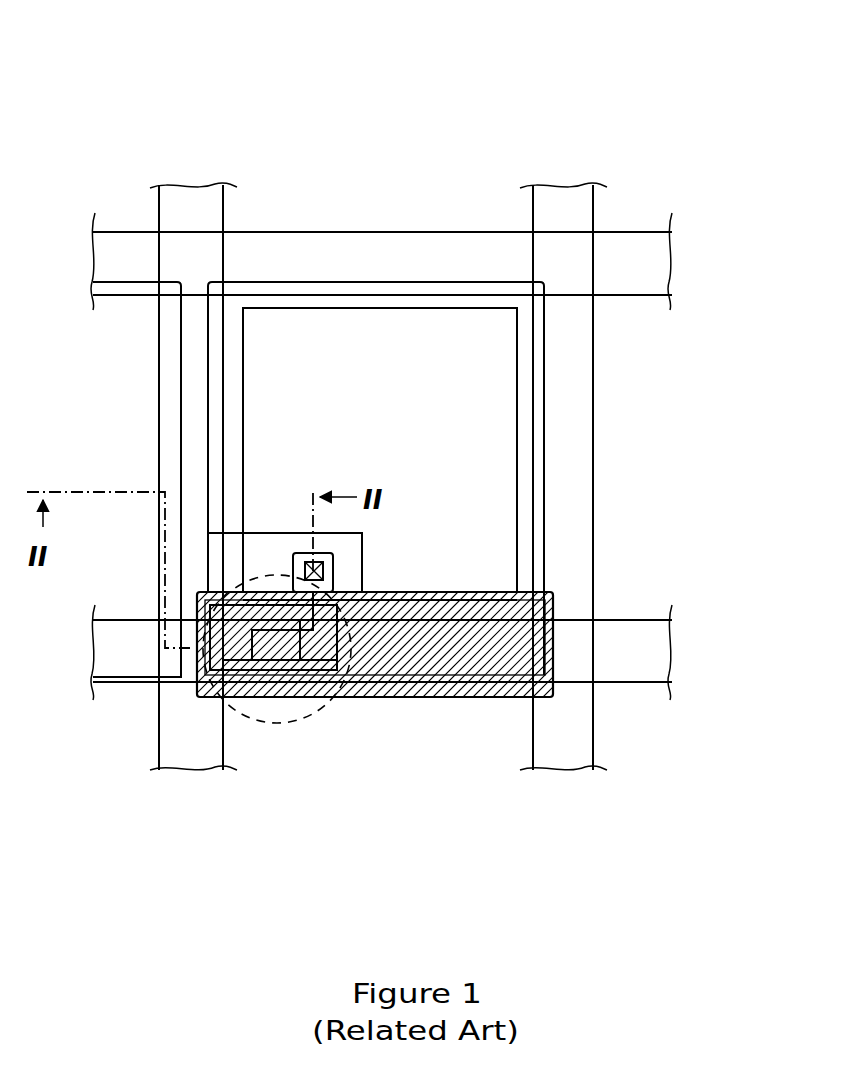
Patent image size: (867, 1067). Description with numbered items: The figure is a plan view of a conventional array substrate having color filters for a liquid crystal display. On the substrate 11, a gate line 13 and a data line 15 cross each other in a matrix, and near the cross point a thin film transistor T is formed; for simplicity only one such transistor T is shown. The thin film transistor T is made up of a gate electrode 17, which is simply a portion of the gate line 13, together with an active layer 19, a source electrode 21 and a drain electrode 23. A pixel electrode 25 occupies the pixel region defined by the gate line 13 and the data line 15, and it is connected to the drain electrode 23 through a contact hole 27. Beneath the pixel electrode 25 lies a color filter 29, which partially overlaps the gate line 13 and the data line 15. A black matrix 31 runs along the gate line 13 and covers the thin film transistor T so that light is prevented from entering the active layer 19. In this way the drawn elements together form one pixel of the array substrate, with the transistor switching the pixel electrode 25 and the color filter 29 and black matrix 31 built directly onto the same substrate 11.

The substrate 11 is at (560, 105).
The gate line 13 is at (630, 616).
The data line 15 is at (156, 446).
The gate electrode 17 is at (278, 690).
The active layer 19 is at (327, 700).
The source electrode 21 is at (200, 642).
The drain electrode 23 is at (392, 592).
The pixel electrode 25 is at (302, 300).
The contact hole 27 is at (300, 573).
The color filter 29 is at (423, 277).
The black matrix 31 is at (462, 697).
The thin film transistor T is at (287, 722).